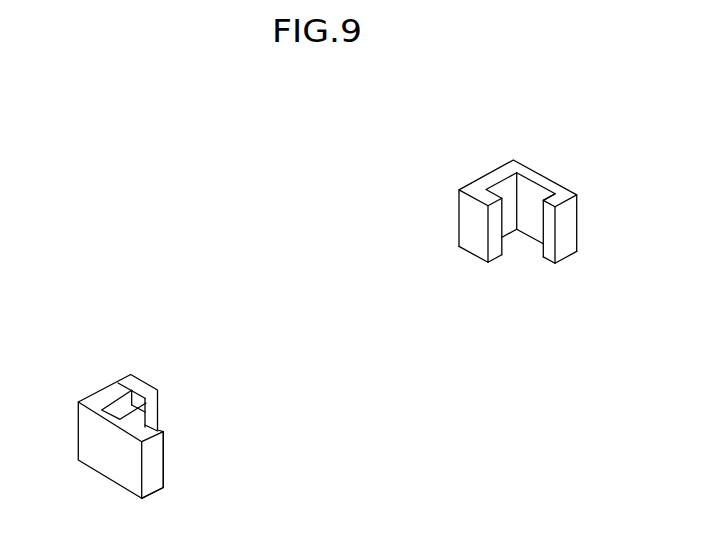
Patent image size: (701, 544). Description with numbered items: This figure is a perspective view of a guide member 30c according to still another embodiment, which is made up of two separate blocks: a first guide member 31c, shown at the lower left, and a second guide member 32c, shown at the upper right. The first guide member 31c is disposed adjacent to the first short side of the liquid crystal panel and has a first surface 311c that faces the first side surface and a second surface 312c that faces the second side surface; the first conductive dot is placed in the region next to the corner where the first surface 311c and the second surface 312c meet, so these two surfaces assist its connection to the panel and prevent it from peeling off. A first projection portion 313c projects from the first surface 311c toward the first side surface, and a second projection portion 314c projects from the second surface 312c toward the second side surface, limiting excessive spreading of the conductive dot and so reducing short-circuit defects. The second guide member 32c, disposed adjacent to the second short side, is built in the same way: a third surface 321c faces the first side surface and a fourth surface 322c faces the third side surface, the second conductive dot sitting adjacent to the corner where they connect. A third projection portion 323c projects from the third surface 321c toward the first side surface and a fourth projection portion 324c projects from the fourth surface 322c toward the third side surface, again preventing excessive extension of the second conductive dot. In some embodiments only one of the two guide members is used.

The guide member 30c is at (363, 121).
The first guide member 31c is at (92, 389).
The second guide member 32c is at (522, 159).
The first surface 311c is at (122, 401).
The second surface 312c is at (125, 413).
The first projection portion 313c is at (153, 412).
The second projection portion 314c is at (164, 459).
The third surface 321c is at (505, 190).
The fourth surface 322c is at (535, 195).
The third projection portion 323c is at (495, 252).
The fourth projection portion 324c is at (552, 250).